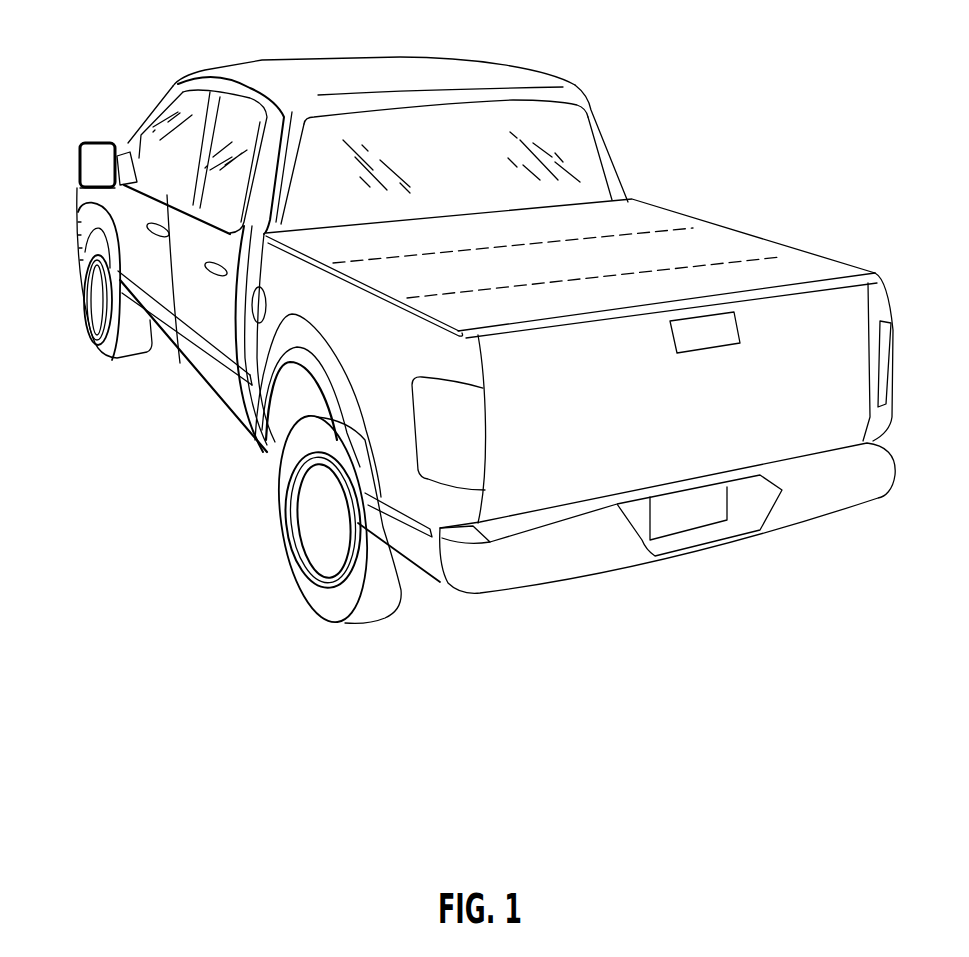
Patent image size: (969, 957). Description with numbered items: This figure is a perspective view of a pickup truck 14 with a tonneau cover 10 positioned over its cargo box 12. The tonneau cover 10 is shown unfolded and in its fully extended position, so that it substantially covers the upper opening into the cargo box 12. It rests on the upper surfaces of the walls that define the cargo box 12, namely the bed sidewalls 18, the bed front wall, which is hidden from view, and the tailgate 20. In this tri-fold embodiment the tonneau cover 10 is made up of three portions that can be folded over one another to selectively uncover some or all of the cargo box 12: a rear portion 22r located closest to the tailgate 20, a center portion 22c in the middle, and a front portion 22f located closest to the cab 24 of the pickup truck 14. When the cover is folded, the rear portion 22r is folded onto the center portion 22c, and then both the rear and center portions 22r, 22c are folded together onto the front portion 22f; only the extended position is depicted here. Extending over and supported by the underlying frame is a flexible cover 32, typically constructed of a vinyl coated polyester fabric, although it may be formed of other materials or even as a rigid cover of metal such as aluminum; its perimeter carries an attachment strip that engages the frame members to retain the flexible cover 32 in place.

The tonneau cover 10 is at (585, 221).
The cargo box 12 is at (352, 361).
The pickup truck 14 is at (125, 549).
The bed sidewalls 18 is at (287, 288).
The tailgate 20 is at (782, 418).
The front portion 22f is at (590, 219).
The center portion 22c is at (677, 244).
The rear portion 22r is at (762, 276).
The cab 24 is at (292, 72).
The flexible cover 32 is at (537, 220).